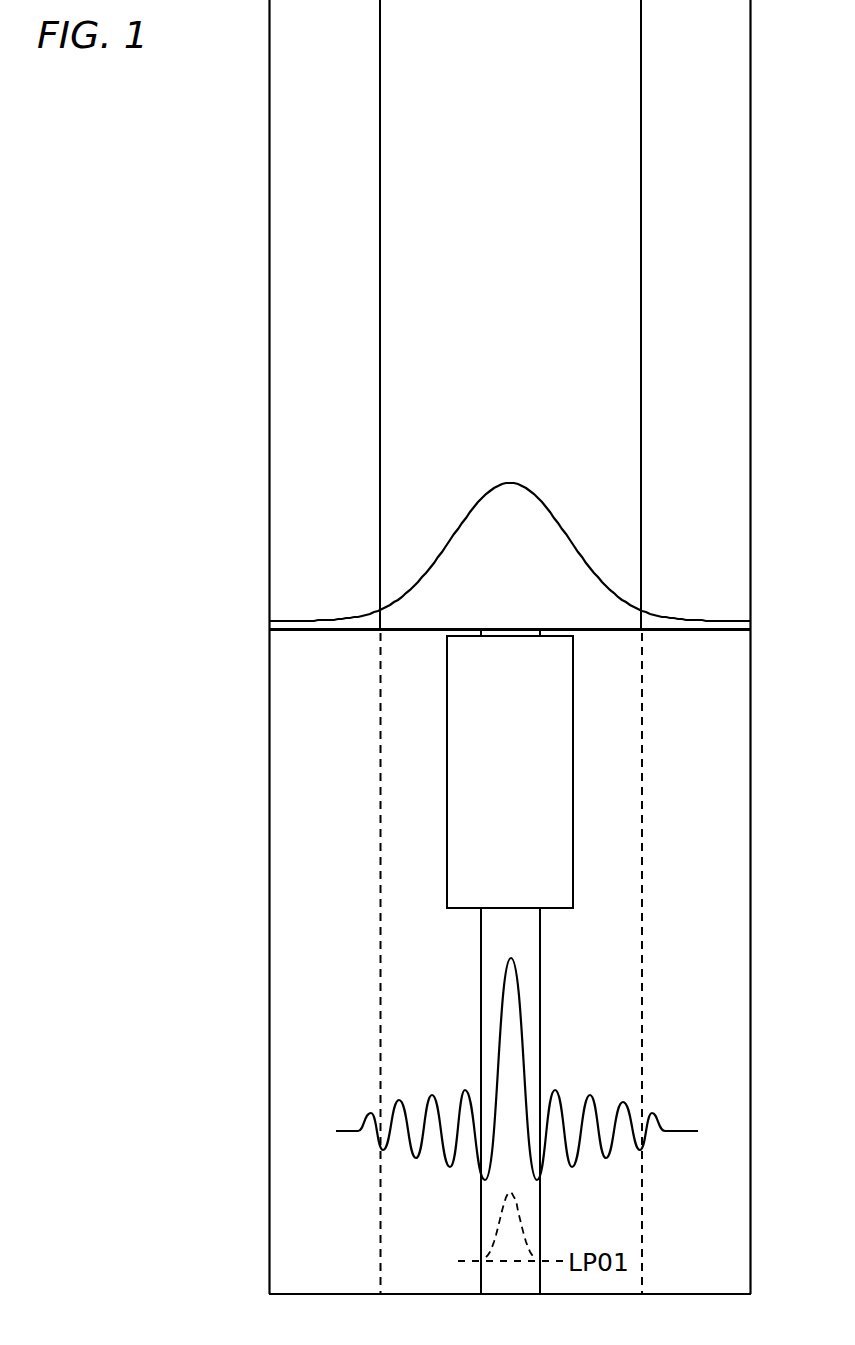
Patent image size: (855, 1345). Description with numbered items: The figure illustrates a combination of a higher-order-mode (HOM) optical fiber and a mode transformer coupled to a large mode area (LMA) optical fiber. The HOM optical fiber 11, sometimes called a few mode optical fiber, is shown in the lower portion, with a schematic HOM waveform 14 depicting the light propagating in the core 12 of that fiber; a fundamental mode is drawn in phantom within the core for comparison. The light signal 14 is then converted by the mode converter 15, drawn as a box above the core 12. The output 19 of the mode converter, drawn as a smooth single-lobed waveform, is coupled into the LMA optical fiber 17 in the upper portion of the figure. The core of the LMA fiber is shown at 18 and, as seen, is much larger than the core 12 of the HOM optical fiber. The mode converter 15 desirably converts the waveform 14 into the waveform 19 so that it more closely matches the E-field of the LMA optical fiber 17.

The HOM optical fiber 11 is at (269, 938).
The core 12 is at (540, 1019).
The HOM waveform 14 is at (677, 1130).
The mode converter 15 is at (573, 778).
The LMA optical fiber 17 is at (269, 290).
The core of the LMA fiber 18 is at (380, 137).
The output of the mode converter 19 is at (549, 511).